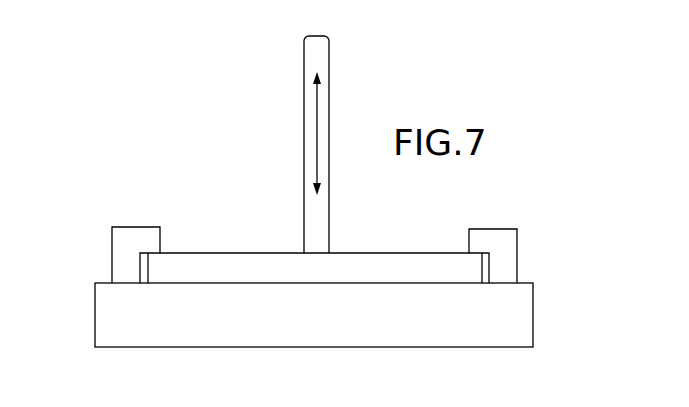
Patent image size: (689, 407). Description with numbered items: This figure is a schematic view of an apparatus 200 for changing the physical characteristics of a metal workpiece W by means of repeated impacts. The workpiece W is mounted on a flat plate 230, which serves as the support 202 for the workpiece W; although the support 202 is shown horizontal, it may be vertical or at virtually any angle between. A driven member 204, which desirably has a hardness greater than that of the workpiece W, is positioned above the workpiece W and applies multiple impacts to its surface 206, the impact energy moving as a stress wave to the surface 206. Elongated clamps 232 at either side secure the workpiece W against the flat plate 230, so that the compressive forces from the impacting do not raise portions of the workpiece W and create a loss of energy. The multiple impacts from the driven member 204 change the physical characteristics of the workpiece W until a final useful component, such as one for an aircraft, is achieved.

The apparatus 200 is at (349, 77).
The support 202 is at (535, 272).
The driven member 204 is at (303, 148).
The surface 206 is at (220, 252).
The flat plate 230 is at (483, 335).
The clamps 232 is at (110, 242).
The workpiece W is at (396, 241).